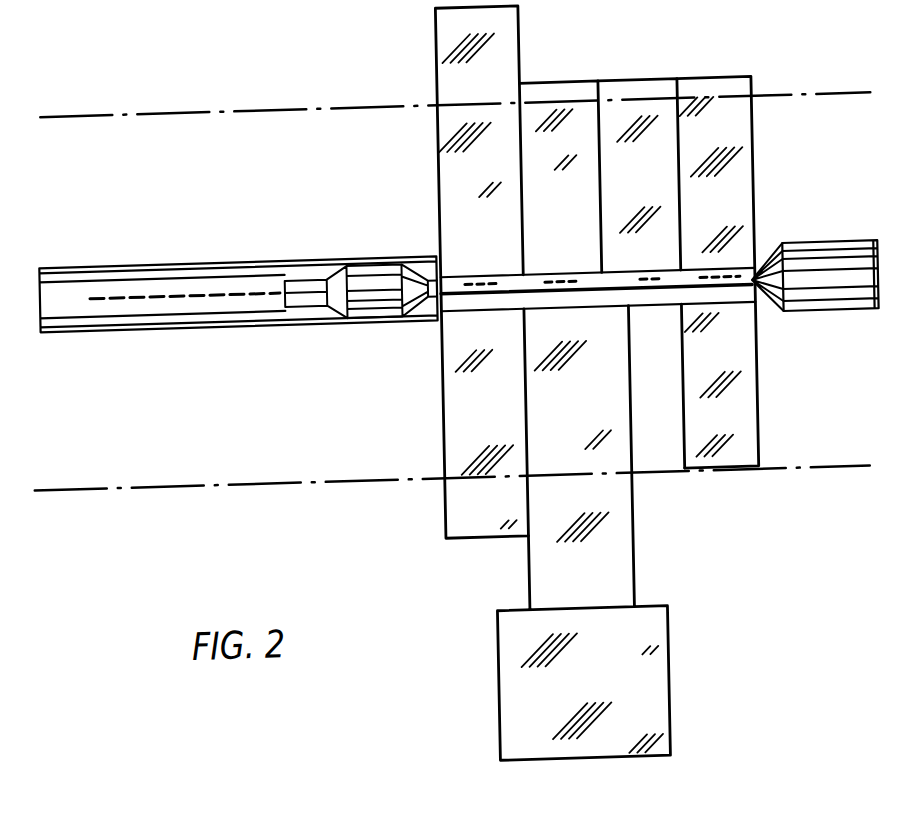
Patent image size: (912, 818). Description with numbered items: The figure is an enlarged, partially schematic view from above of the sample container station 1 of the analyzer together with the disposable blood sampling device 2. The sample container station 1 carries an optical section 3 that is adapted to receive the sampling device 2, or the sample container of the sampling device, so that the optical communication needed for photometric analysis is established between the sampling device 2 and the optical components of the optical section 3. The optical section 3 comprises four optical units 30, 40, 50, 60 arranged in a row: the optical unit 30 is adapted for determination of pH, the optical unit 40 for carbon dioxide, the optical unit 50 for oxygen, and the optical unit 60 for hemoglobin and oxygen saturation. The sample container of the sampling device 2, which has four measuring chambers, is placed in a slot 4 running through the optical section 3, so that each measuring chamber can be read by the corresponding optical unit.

The sample container station 1 is at (183, 112).
The blood sampling device 2 is at (833, 264).
The optical section 3 is at (634, 381).
The slot 4 is at (730, 305).
The optical unit 30 is at (508, 26).
The optical unit 40 is at (579, 89).
The optical unit 50 is at (656, 94).
The optical unit 60 is at (737, 86).